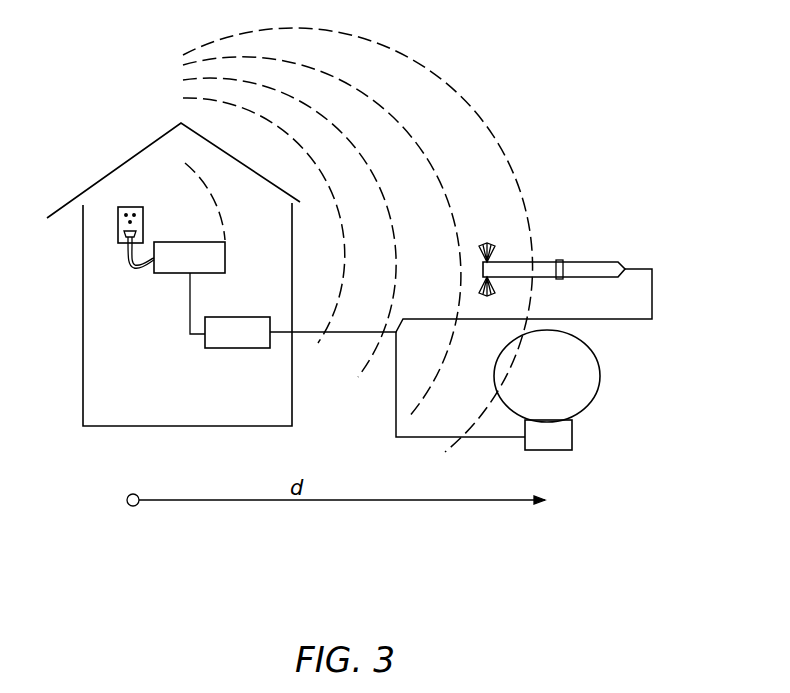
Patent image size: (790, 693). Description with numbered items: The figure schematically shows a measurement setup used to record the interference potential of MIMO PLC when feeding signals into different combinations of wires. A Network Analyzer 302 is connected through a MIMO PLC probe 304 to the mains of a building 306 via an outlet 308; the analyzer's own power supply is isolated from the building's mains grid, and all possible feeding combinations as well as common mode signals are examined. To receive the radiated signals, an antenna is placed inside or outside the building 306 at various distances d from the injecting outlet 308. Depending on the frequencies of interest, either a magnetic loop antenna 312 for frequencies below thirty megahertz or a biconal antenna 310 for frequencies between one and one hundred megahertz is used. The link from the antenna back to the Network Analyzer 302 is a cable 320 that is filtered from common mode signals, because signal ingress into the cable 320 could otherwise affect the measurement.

The Network Analyzer 302 is at (228, 348).
The MIMO PLC probe 304 is at (167, 275).
The building 306 is at (125, 160).
The outlet 308 is at (130, 207).
The biconal antenna 310 is at (598, 262).
The magnetic loop antenna 312 is at (600, 378).
The cable 320 is at (347, 333).